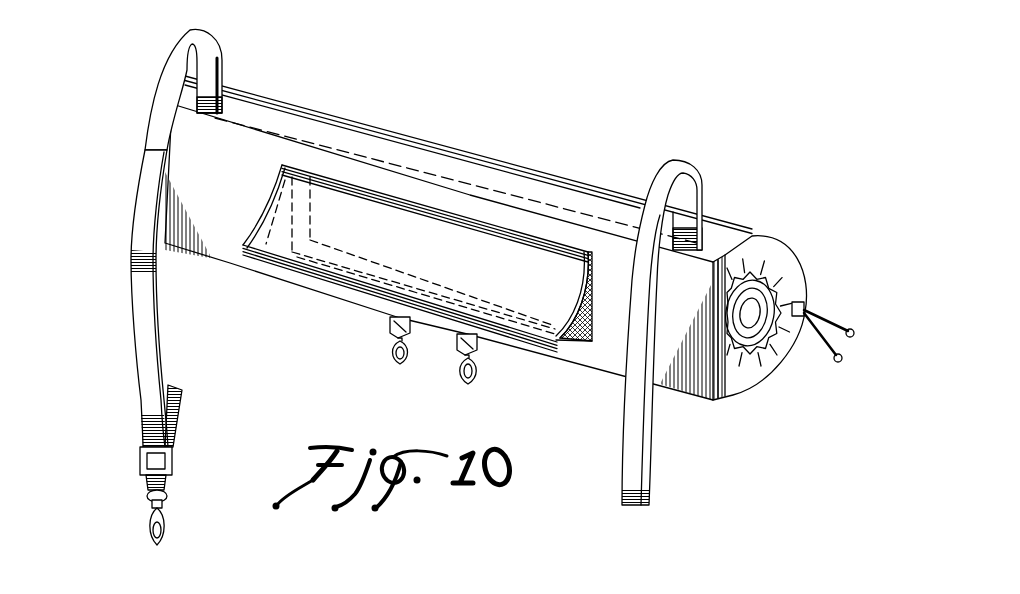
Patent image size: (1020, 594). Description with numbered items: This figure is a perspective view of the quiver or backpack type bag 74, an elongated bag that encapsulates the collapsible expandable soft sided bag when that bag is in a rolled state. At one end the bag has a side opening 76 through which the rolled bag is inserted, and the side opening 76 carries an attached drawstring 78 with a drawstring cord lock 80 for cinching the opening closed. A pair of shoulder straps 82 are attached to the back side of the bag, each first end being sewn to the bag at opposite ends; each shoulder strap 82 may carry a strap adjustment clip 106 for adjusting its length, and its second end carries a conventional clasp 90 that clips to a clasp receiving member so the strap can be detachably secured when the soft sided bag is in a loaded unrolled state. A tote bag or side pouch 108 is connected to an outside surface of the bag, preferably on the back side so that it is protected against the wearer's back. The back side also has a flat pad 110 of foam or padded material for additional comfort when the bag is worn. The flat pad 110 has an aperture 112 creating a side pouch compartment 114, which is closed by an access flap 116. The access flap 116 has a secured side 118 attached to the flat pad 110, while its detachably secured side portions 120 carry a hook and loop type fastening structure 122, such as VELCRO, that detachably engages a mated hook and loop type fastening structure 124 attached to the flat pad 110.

The quiver or backpack type bag 74 is at (290, 102).
The side opening 76 is at (767, 357).
The drawstring 78 is at (832, 313).
The drawstring cord lock 80 is at (802, 305).
The shoulder strap 82 is at (150, 187).
The clasp 90 is at (148, 533).
The strap adjustment clip 106 is at (143, 459).
The side pouch 108 is at (505, 243).
The flat pad 110 is at (395, 173).
The aperture 112 is at (317, 200).
The side pouch compartment 114 is at (438, 243).
The access flap 116 is at (563, 343).
The secured side 118 is at (563, 248).
The detachably secured side portions 120 is at (258, 240).
The hook and loop type fastening structure 122 is at (327, 262).
The mated hook and loop type fastening structure 124 is at (583, 345).